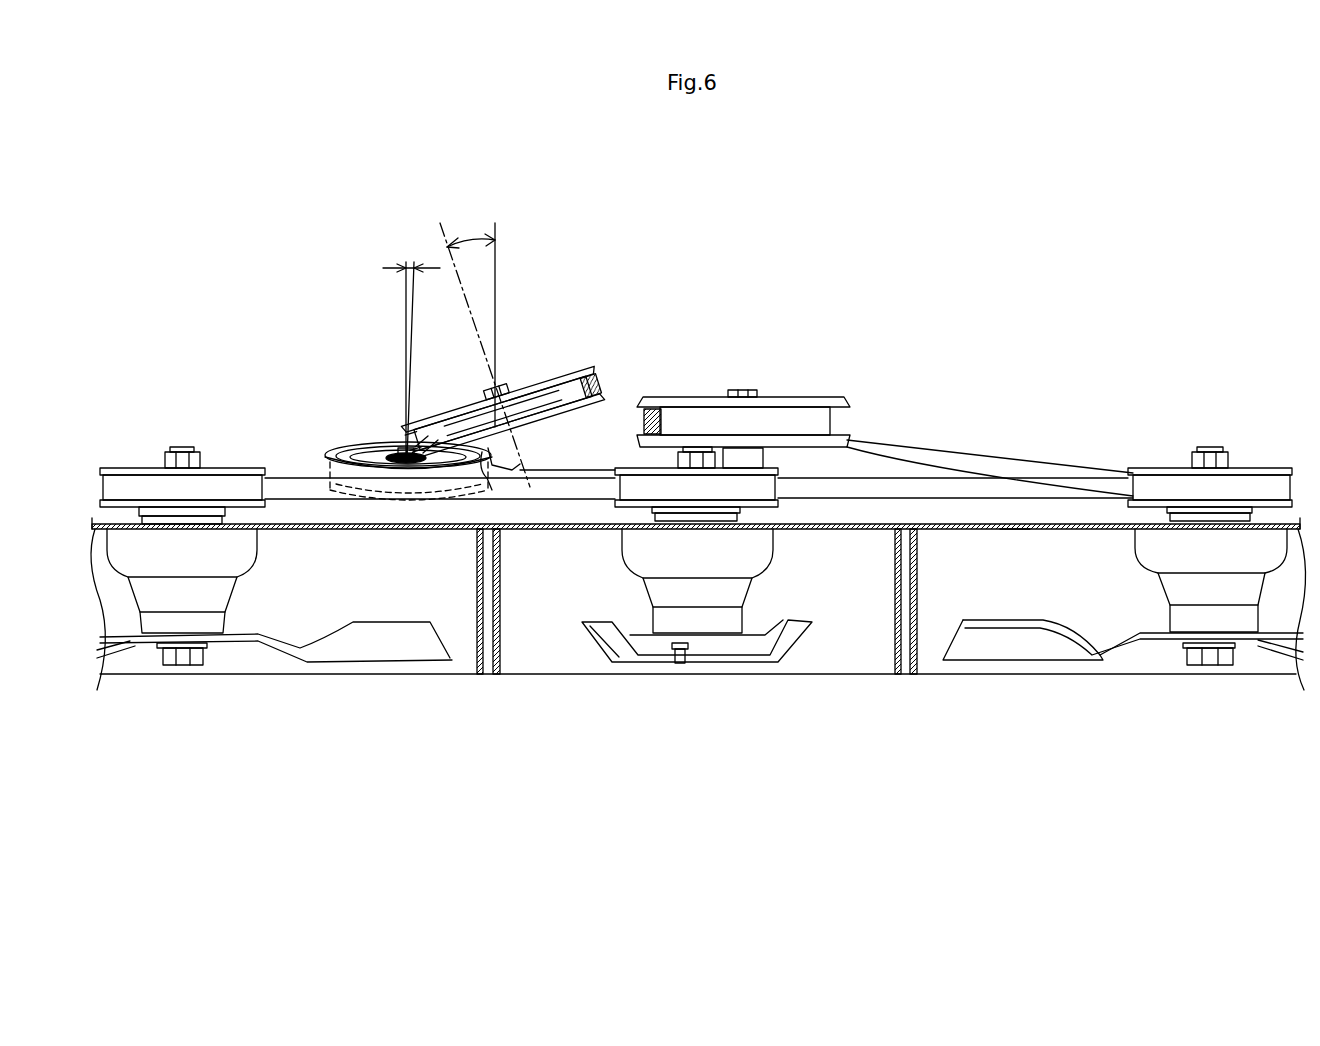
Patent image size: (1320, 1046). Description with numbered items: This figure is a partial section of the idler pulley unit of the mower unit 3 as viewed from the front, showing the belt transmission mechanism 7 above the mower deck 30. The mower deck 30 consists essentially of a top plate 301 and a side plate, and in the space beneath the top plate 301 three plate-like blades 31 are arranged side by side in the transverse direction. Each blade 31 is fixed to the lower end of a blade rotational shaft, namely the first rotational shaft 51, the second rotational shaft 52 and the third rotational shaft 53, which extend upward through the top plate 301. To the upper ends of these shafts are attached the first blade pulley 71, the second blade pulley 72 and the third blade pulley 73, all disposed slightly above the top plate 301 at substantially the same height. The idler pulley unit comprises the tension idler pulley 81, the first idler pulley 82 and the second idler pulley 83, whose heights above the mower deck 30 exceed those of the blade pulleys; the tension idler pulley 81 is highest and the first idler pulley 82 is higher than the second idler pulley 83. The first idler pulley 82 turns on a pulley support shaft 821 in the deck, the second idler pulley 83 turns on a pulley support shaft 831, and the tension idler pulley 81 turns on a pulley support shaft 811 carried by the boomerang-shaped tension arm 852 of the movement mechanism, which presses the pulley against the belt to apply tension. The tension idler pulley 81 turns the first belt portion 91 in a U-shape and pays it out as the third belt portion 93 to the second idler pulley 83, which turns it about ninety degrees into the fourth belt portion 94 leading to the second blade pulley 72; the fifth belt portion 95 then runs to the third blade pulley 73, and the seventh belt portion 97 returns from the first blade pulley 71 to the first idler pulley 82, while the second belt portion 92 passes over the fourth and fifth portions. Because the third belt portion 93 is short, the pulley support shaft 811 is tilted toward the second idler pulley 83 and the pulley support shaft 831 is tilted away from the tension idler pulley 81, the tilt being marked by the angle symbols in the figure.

The mower unit 3 is at (1128, 242).
The belt transmission mechanism 7 is at (930, 412).
The mower deck 30 is at (1055, 524).
The top plate 301 is at (1015, 530).
The blade 31 is at (235, 650).
The first rotational shaft 51 is at (1208, 447).
The second rotational shaft 52 is at (697, 447).
The third rotational shaft 53 is at (183, 450).
The first blade pulley 71 is at (1255, 468).
The second blade pulley 72 is at (745, 505).
The third blade pulley 73 is at (120, 470).
The tension idler pulley 81 is at (545, 375).
The pulley support shaft 811 is at (502, 470).
The first idler pulley 82 is at (805, 397).
The pulley support shaft 821 is at (752, 447).
The second idler pulley 83 is at (360, 450).
The pulley support shaft 831 is at (405, 445).
The tension arm 852 is at (590, 458).
The first belt portion 91 is at (607, 385).
The second belt portion 92 is at (645, 435).
The third belt portion 93 is at (420, 440).
The fourth belt portion 94 is at (325, 473).
The fifth belt portion 95 is at (305, 492).
The seventh belt portion 97 is at (975, 455).